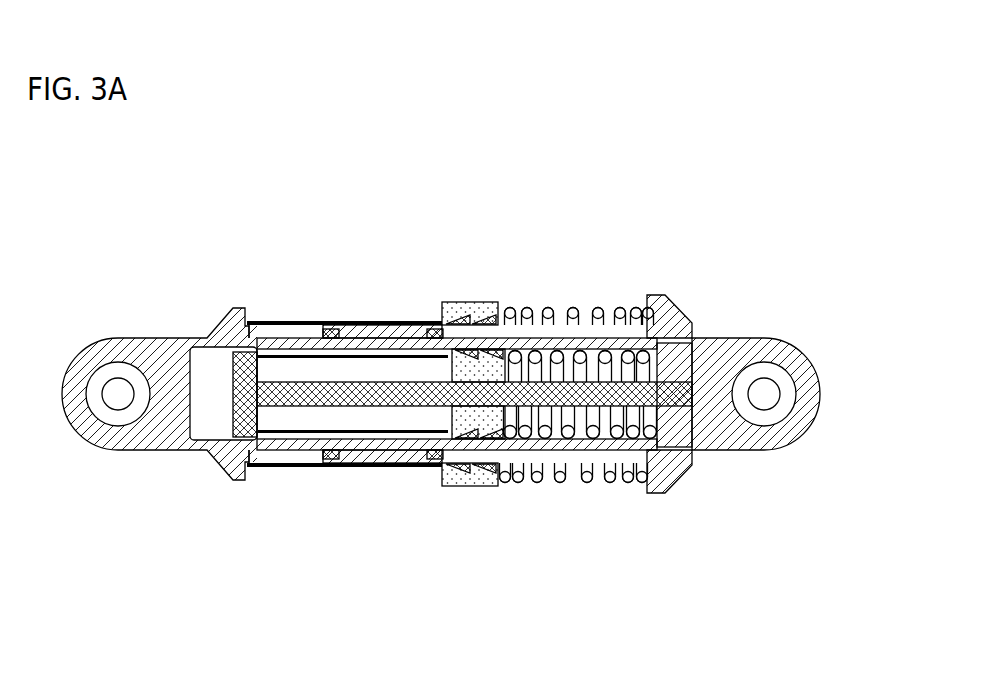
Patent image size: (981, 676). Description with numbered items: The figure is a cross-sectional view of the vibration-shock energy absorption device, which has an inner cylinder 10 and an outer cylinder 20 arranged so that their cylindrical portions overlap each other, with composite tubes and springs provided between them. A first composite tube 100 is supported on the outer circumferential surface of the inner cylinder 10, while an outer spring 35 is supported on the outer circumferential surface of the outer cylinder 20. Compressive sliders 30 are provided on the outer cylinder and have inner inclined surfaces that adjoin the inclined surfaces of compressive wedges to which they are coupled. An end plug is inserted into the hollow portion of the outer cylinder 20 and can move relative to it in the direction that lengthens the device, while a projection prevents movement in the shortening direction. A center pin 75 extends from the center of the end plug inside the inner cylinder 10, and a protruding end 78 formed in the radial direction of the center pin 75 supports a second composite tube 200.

The inner cylinder 10 is at (123, 348).
The outer cylinder 20 is at (683, 307).
The compressive slider 30 is at (480, 488).
The outer spring 35 is at (588, 483).
The center pin 75 is at (375, 387).
The protruding end 78 is at (243, 432).
The first composite tube 100 is at (307, 470).
The second composite tube 200 is at (302, 365).